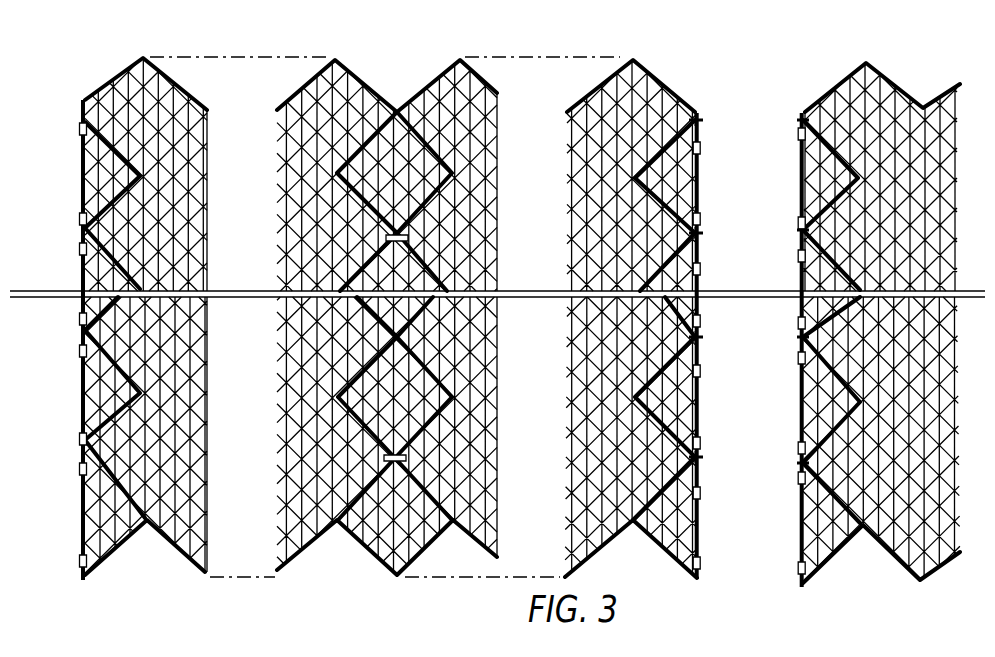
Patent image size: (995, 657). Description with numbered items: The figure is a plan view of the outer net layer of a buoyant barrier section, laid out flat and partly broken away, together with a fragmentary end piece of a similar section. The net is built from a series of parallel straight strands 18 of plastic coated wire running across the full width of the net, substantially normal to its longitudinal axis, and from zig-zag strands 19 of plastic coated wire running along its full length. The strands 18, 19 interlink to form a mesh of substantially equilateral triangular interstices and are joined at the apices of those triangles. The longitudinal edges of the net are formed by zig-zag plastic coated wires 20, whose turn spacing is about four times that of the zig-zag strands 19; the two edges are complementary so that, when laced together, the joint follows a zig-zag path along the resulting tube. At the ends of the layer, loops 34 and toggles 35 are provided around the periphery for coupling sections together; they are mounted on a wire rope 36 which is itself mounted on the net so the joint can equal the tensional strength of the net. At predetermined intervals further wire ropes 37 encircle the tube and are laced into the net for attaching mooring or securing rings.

The straight strands 18 is at (278, 148).
The zig-zag strands 19 is at (209, 237).
The zig-zag plastic coated wires 20 is at (206, 106).
The loops 34 is at (84, 100).
The toggles 35 is at (703, 234).
The wire rope 36 is at (80, 152).
The further wire ropes 37 is at (410, 239).